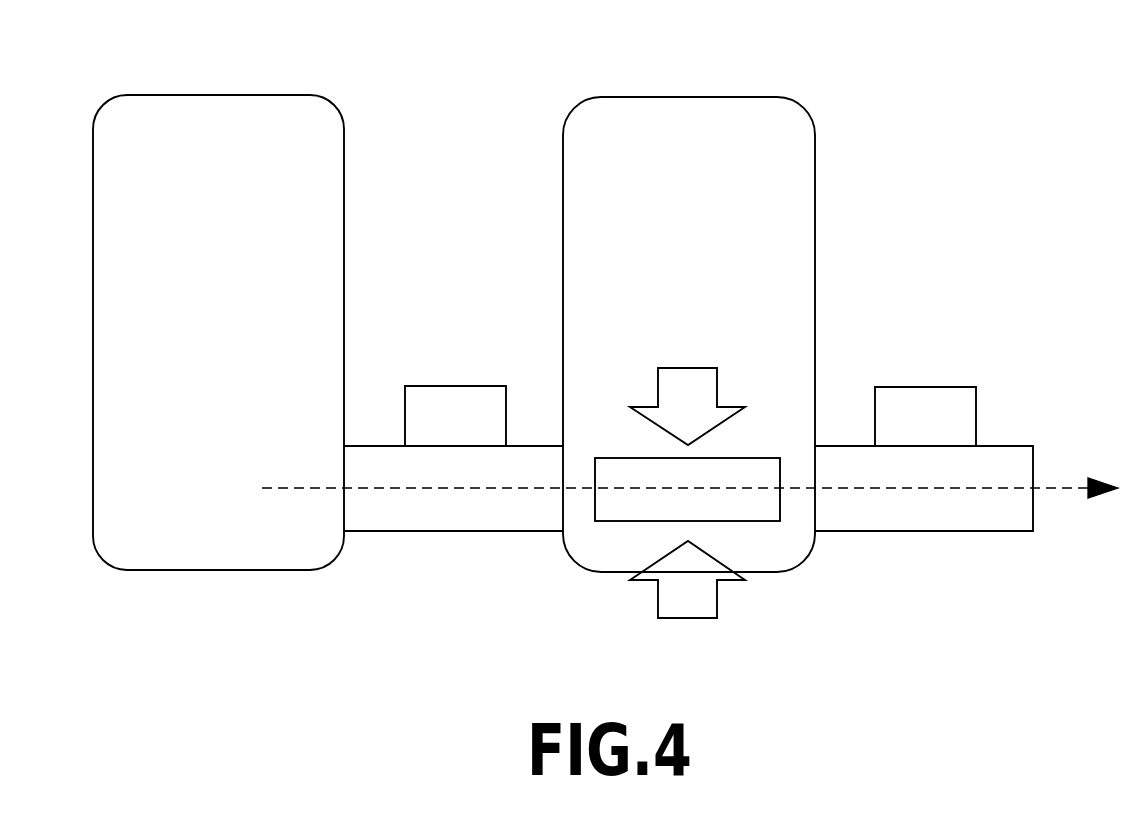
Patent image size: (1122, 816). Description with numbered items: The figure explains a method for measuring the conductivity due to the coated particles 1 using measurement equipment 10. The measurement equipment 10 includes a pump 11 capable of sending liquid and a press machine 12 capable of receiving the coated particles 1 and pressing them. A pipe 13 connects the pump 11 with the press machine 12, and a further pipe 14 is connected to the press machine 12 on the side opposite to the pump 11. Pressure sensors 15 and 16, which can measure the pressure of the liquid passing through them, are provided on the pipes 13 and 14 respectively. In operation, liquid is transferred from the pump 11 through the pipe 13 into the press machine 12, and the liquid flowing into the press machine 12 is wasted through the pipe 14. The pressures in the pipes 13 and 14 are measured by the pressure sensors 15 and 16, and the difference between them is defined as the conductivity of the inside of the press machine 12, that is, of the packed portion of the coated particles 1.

The coated particles 1 is at (630, 505).
The measurement equipment 10 is at (968, 127).
The pump 11 is at (240, 120).
The press machine 12 is at (703, 122).
The pipe 13 is at (447, 515).
The pipe 14 is at (940, 515).
The pressure sensor 15 is at (457, 405).
The pressure sensor 16 is at (925, 405).